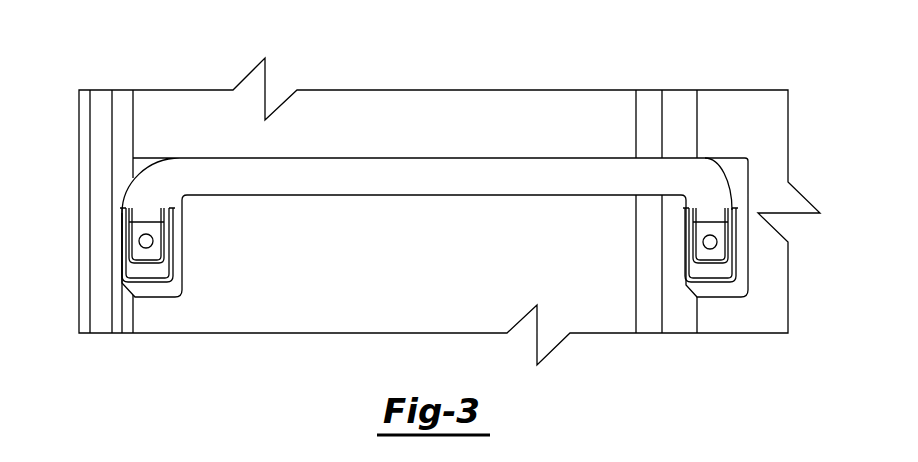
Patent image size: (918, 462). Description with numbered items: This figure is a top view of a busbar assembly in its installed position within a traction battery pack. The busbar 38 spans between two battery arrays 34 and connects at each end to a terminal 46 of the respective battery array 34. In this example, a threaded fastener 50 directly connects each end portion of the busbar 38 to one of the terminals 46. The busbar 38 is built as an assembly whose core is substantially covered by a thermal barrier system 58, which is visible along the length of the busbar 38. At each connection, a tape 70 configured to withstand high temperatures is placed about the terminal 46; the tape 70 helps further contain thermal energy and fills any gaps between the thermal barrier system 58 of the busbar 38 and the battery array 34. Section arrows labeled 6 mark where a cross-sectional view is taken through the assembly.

The battery array 34 is at (222, 318).
The busbar 38 is at (447, 168).
The thermal barrier system 58 is at (703, 182).
The tape 70 is at (178, 222).
The terminal 46 is at (127, 274).
The threaded fastener 50 is at (139, 241).
The section line 6- 6 is at (668, 33).